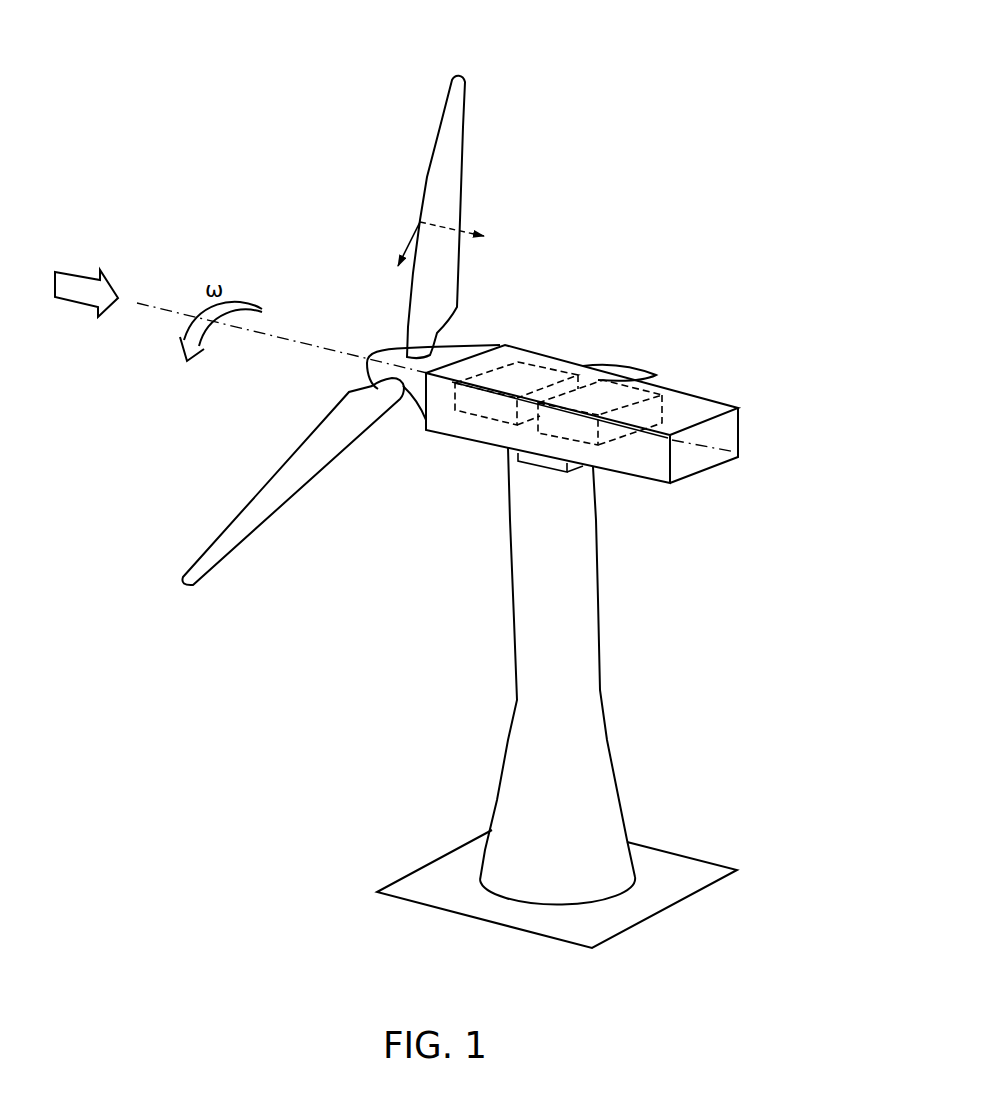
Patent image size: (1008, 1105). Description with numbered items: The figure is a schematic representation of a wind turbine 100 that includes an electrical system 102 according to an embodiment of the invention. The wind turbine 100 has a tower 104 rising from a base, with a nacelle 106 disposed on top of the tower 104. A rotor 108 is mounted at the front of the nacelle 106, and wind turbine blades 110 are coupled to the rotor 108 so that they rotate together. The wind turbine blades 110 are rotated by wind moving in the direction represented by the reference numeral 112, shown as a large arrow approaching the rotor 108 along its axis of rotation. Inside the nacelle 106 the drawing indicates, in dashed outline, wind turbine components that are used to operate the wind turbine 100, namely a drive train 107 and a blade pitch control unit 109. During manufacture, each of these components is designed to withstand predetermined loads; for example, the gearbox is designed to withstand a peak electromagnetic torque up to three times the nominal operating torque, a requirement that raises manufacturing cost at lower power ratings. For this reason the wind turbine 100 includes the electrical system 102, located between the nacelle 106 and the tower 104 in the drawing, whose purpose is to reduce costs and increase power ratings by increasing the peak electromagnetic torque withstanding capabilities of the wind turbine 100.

The wind turbine 100 is at (746, 80).
The electrical system 102 is at (540, 462).
The tower 104 is at (600, 670).
The nacelle 106 is at (728, 428).
The drive train 107 is at (532, 375).
The rotor 108 is at (417, 413).
The blade pitch control unit 109 is at (620, 393).
The wind turbine blades 110 is at (463, 157).
The wind direction 112 is at (77, 272).